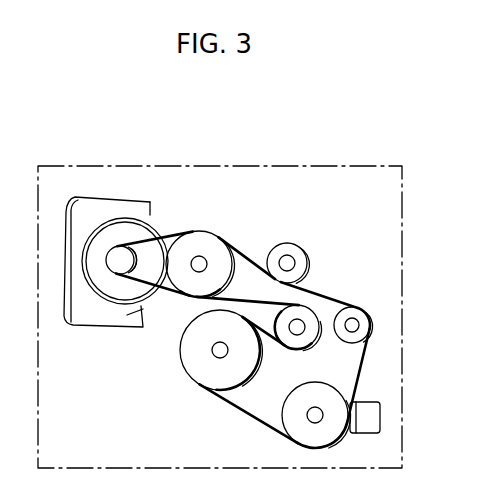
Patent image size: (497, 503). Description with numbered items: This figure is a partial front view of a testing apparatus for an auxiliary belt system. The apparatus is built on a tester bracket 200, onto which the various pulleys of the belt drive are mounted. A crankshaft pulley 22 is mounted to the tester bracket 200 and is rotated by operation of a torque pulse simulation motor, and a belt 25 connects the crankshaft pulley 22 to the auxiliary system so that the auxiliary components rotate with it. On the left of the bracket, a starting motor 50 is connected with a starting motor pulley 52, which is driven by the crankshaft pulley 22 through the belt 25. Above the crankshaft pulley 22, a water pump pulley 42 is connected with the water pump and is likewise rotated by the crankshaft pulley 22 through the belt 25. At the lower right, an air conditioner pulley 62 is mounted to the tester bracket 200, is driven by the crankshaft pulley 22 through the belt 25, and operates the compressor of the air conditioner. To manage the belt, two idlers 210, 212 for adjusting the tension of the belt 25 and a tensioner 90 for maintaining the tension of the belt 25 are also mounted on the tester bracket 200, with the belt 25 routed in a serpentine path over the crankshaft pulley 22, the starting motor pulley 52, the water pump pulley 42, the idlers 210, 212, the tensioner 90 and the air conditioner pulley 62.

The tester bracket 200 is at (390, 222).
The starting motor 50 is at (105, 283).
The starting motor pulley 52 is at (121, 268).
The water pump pulley 42 is at (203, 240).
The idler 210 is at (289, 252).
The tensioner 90 is at (302, 313).
The idler 212 is at (359, 312).
The crankshaft pulley 22 is at (187, 367).
The air conditioner pulley 62 is at (288, 427).
The belt 25 is at (226, 406).